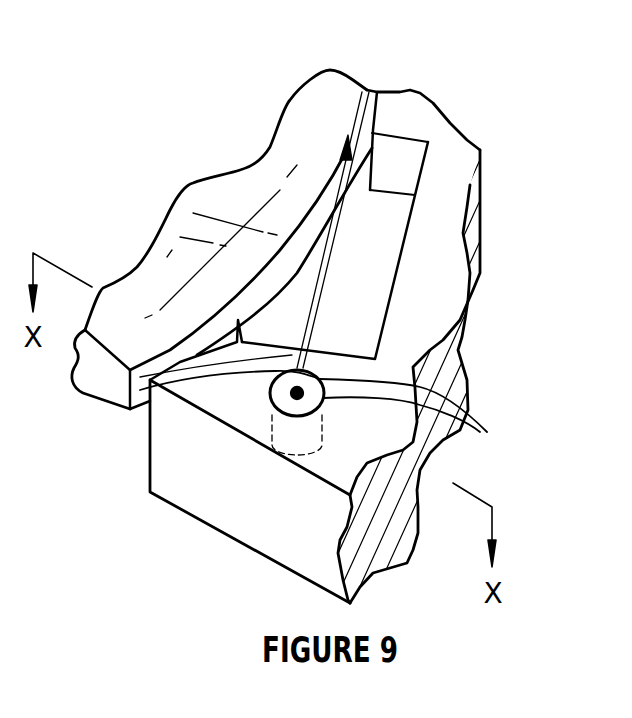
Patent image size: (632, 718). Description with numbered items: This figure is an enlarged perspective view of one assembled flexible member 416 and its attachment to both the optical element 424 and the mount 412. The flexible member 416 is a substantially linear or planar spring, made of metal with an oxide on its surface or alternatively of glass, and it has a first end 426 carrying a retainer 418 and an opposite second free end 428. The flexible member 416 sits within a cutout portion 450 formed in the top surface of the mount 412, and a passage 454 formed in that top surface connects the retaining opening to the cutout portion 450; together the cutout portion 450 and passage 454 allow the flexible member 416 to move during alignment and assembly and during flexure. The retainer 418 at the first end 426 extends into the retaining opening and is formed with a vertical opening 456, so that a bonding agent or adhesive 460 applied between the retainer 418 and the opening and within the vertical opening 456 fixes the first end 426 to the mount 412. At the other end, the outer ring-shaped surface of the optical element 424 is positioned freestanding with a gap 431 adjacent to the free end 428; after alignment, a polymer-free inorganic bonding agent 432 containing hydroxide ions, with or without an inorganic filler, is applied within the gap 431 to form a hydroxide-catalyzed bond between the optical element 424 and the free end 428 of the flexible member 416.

The mount 412 is at (405, 95).
The flexible member 416 is at (342, 248).
The retainer 418 is at (150, 400).
The optical element 424 is at (311, 116).
The first end 426 is at (292, 357).
The second free end 428 is at (370, 127).
The gap 431 is at (333, 167).
The polymer-free inorganic bonding agent 432 is at (347, 150).
The cutout portion 450 is at (387, 208).
The passage 454 is at (318, 348).
The vertical opening 456 is at (270, 387).
The bonding agent or adhesive 460 is at (332, 405).